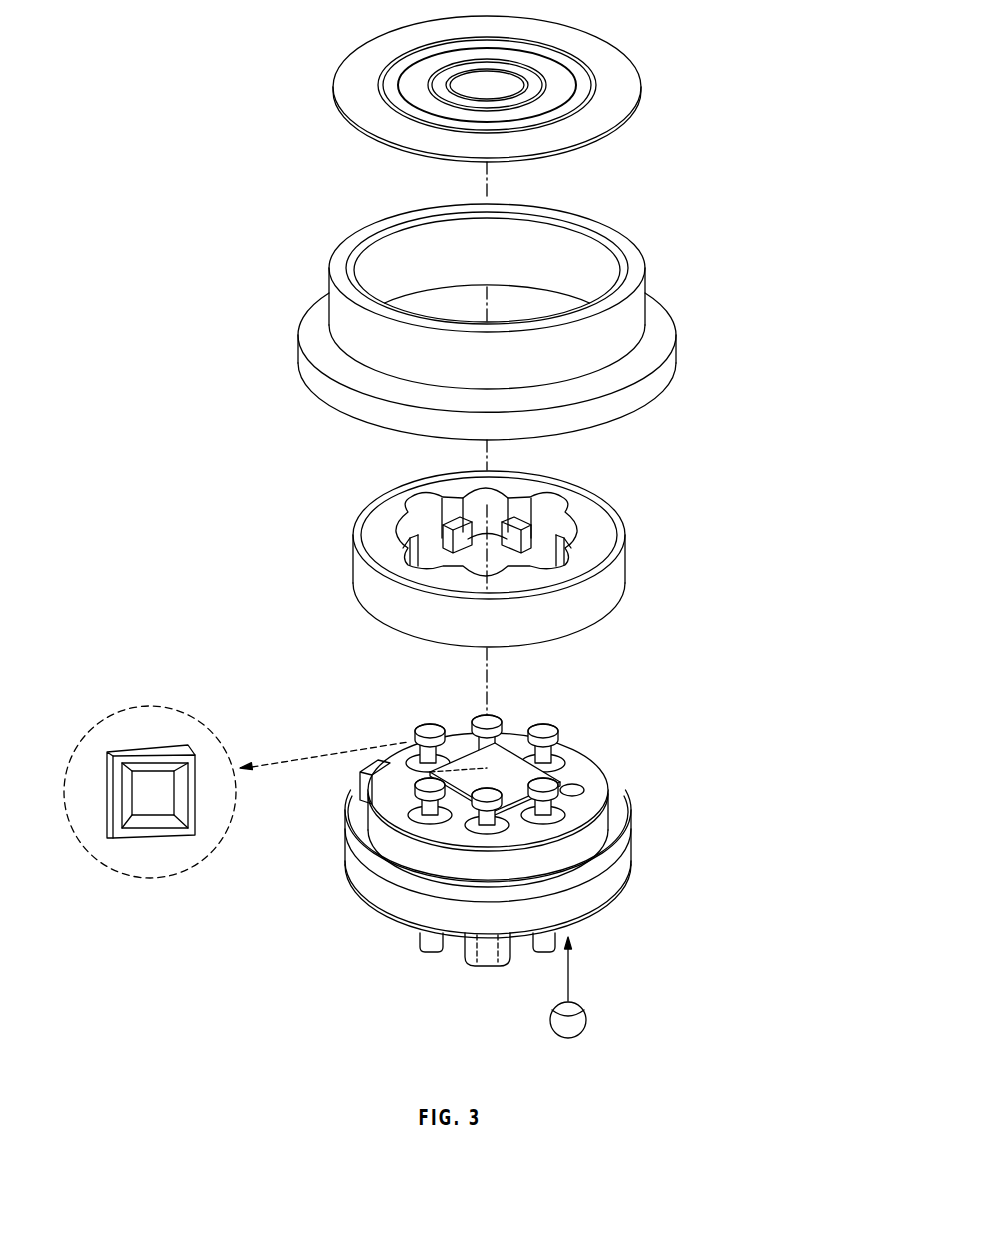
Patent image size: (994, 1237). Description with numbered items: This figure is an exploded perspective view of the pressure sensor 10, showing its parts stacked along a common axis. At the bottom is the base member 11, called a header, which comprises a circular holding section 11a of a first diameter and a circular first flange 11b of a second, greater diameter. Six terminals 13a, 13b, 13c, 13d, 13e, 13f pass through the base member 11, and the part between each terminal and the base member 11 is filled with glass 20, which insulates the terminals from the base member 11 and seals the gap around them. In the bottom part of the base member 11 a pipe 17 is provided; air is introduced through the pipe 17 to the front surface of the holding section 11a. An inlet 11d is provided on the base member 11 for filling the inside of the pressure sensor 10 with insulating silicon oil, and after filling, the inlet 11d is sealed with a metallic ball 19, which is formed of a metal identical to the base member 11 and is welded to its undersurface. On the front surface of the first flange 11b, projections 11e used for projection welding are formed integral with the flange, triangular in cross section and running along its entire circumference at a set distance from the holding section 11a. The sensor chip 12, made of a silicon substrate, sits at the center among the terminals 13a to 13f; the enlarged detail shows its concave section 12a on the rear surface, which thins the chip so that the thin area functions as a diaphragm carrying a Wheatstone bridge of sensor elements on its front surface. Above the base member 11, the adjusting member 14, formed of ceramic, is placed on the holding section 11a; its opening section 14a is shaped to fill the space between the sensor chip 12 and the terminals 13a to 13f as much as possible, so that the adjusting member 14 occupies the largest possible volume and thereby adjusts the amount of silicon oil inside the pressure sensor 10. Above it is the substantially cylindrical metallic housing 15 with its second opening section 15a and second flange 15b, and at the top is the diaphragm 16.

The pressure sensor 10 is at (750, 62).
The base member 11 is at (513, 853).
The holding section 11a is at (398, 767).
The first flange 11b is at (350, 870).
The inlet 11d is at (577, 790).
The projections 11e is at (352, 812).
The sensor chip 12 is at (312, 794).
The concave section 12a is at (152, 800).
The terminal 13a is at (432, 727).
The terminal 13b is at (487, 716).
The terminal 13c is at (551, 735).
The terminal 13d is at (549, 810).
The terminal 13e is at (485, 826).
The terminal 13f is at (412, 820).
The adjusting member 14 is at (497, 556).
The opening section 14a is at (428, 527).
The housing 15 is at (467, 308).
The second opening section 15a is at (397, 257).
The second flange 15b is at (318, 332).
The diaphragm 16 is at (643, 79).
The pipe 17 is at (470, 966).
The metallic ball 19 is at (587, 1021).
The glass 20 is at (462, 830).